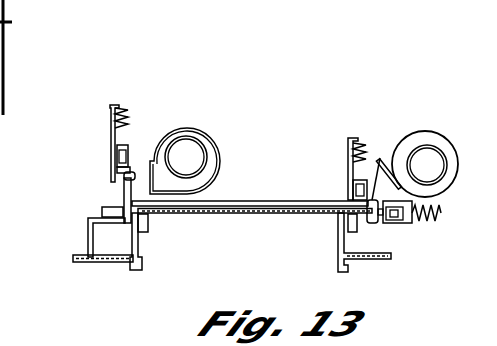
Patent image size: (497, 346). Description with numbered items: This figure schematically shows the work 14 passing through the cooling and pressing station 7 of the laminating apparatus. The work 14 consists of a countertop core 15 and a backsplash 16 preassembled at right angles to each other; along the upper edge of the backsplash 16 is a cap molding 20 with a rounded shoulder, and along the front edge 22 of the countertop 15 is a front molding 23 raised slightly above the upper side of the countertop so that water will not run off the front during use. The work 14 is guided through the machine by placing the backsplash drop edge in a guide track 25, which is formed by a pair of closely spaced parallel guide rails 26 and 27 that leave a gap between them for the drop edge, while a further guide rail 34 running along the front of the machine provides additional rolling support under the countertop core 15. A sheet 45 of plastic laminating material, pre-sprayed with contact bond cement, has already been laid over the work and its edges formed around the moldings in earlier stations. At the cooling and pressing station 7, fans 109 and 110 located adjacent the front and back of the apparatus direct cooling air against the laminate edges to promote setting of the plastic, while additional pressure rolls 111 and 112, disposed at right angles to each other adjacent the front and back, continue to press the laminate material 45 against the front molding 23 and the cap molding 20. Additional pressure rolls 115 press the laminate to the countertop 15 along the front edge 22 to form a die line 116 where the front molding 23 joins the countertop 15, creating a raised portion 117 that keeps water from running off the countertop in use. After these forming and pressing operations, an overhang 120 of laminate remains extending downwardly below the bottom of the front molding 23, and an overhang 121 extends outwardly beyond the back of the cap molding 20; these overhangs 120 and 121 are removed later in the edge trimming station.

The cooling and pressing station 7 is at (214, 110).
The work 14 is at (241, 219).
The countertop core 15 is at (193, 212).
The backsplash 16 is at (123, 193).
The cap molding 20 is at (131, 176).
The front edge 22 is at (349, 203).
The front molding 23 is at (372, 223).
The guide track 25 is at (116, 240).
The guide rail 26 is at (88, 238).
The guide rail 27 is at (143, 253).
The further guide rail 34 is at (338, 247).
The sheet of plastic laminating material 45 is at (258, 200).
The fan 109 is at (437, 142).
The fan 110 is at (186, 128).
The pressure roll 111 is at (406, 226).
The pressure roll 112 is at (117, 145).
The pressure rolls 115 is at (351, 182).
The die line 116 is at (382, 160).
The raised portion 117 is at (400, 187).
The overhang 120 is at (377, 223).
The overhang 121 is at (117, 170).